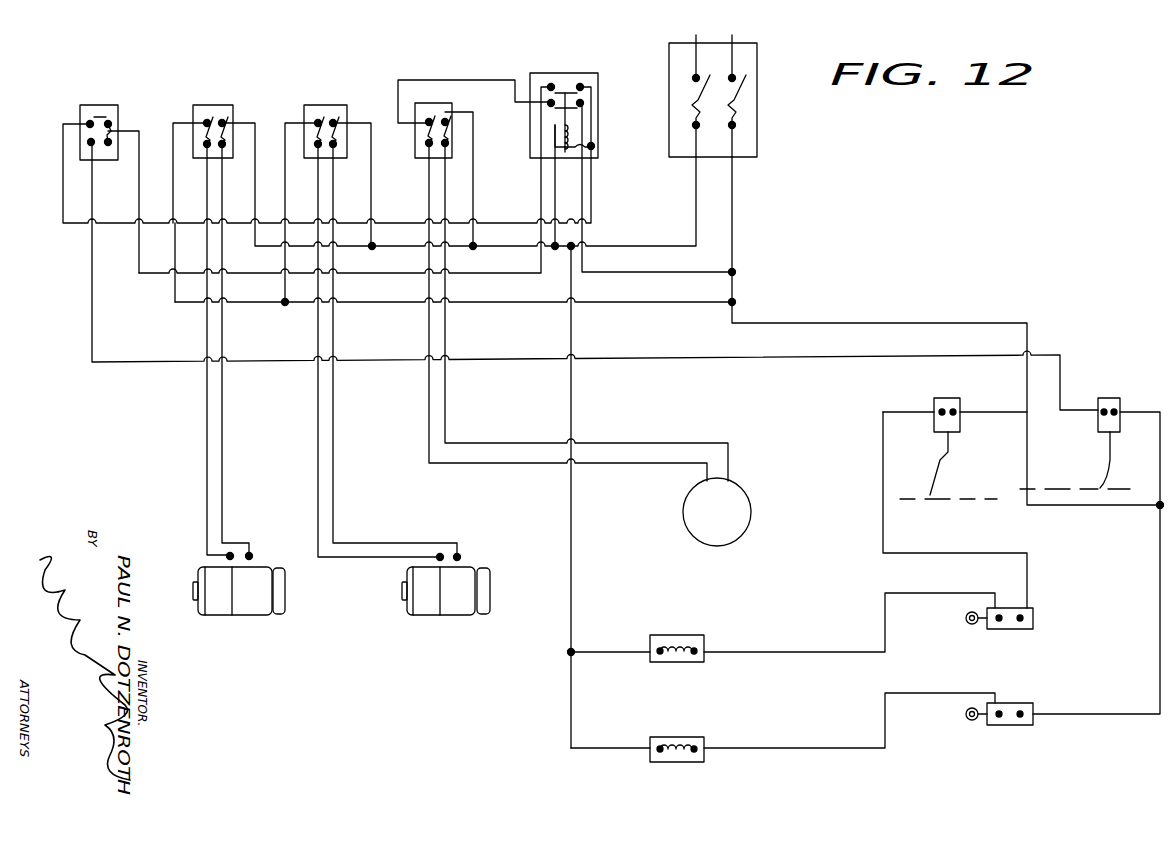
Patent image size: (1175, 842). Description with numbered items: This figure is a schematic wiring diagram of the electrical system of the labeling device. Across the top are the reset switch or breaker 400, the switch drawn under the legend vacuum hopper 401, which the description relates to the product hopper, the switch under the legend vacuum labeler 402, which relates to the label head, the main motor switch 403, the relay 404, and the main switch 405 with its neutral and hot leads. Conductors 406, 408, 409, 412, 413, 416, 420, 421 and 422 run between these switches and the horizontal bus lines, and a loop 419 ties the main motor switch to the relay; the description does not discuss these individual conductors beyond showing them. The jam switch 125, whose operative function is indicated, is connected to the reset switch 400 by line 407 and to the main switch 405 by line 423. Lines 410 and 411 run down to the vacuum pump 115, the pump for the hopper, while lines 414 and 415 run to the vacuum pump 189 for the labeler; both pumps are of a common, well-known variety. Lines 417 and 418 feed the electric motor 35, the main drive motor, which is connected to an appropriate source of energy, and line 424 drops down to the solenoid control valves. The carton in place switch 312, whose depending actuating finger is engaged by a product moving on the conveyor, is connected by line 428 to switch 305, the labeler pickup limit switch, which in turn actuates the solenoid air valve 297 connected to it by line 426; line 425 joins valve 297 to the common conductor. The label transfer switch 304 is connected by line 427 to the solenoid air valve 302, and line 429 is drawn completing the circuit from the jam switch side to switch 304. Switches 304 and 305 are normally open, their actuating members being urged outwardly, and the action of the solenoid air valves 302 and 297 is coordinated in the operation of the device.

The reset switch 400 is at (80, 108).
The vacuum hopper switch 401 is at (200, 106).
The vacuum labeler switch 402 is at (315, 111).
The main motor switch 403 is at (447, 104).
The relay 404 is at (600, 90).
The main switch 405 is at (758, 68).
The conductor 406 is at (63, 172).
The line 407 is at (92, 278).
The conductor 408 is at (139, 205).
The conductor 409 is at (172, 137).
The conductor 410 is at (208, 420).
The conductor 411 is at (226, 432).
The conductor 412 is at (255, 150).
The conductor 413 is at (283, 291).
The conductor 414 is at (318, 465).
The conductor 415 is at (335, 490).
The conductor 416 is at (371, 205).
The conductor 417 is at (429, 410).
The conductor 418 is at (447, 432).
The conductor 419 is at (509, 78).
The conductor 420 is at (473, 178).
The conductor 421 is at (541, 187).
The conductor 422 is at (588, 183).
The line 423 is at (733, 210).
The conductor 424 is at (572, 432).
The conductor 425 is at (615, 632).
The line 426 is at (860, 648).
The line 427 is at (860, 722).
The line 428 is at (995, 535).
The conductor 429 is at (1160, 550).
The motor 35 is at (738, 512).
The vacuum pump 115 is at (265, 598).
The vacuum pump 189 is at (463, 573).
The solenoid air valve 297 is at (704, 642).
The solenoid air valve 302 is at (704, 737).
The carton in place switch 312 is at (962, 425).
The jam switch 125 is at (1096, 418).
The labeler pickup switch 305 is at (1033, 615).
The label transfer switch 304 is at (1033, 712).